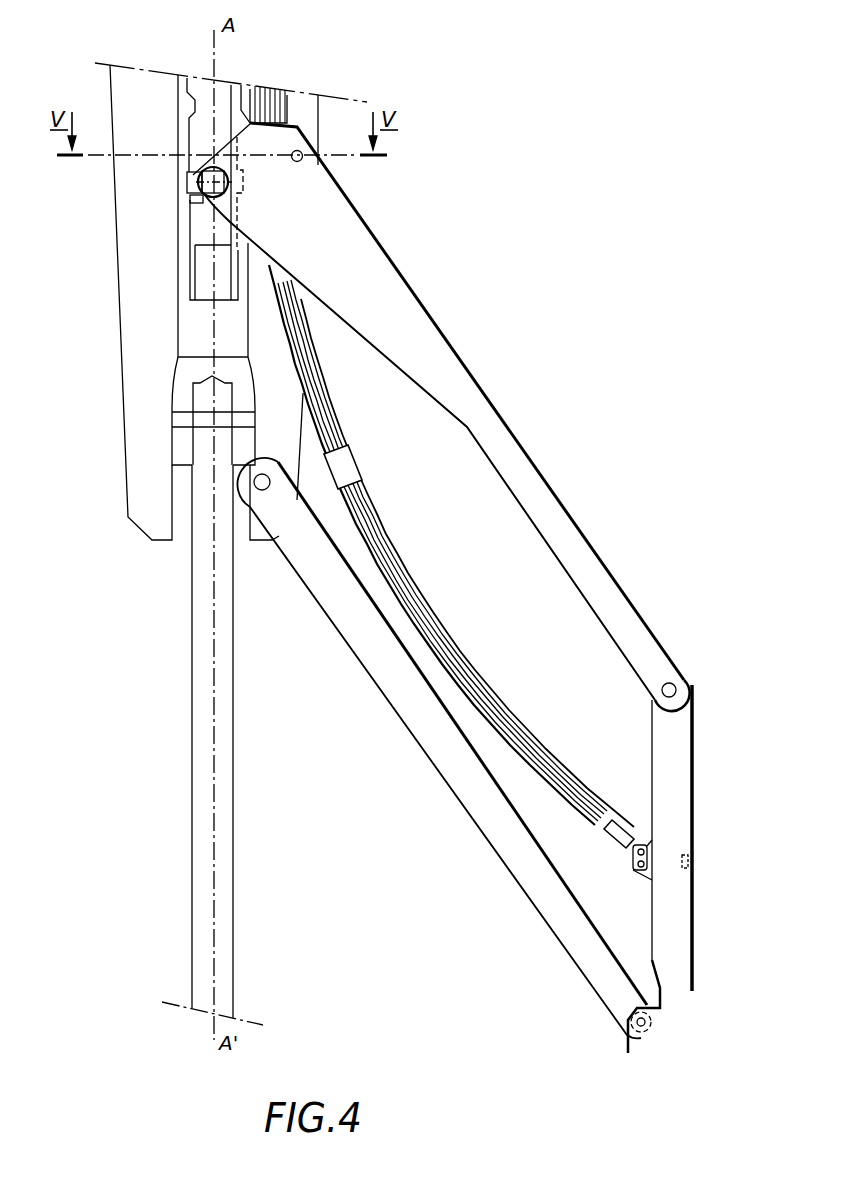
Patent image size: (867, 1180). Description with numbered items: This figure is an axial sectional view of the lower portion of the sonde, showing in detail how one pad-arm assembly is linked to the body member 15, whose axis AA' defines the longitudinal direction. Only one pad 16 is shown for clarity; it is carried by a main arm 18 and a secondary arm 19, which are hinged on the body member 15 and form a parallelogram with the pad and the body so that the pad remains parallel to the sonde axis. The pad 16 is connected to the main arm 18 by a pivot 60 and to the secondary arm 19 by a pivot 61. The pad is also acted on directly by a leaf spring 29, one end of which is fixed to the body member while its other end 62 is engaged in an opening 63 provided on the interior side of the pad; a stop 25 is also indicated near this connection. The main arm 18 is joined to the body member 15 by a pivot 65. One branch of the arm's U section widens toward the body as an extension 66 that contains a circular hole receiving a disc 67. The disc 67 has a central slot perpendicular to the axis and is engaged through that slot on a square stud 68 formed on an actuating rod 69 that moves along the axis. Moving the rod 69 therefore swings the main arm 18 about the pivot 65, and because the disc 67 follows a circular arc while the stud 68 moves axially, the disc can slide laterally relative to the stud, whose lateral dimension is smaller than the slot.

The body member 15 is at (318, 124).
The pad 16 is at (674, 748).
The main arm 18 is at (481, 402).
The secondary arm 19 is at (410, 718).
The stop 25 is at (690, 862).
The leaf spring 29 is at (397, 548).
The pivot 60 is at (676, 688).
The pivot 61 is at (638, 1018).
The end of the leaf spring 62 is at (646, 850).
The opening 63 is at (646, 866).
The pivot 65 is at (318, 160).
The extension 66 is at (244, 198).
The disc 67 is at (203, 203).
The square stud 68 is at (200, 178).
The actuating rod 69 is at (188, 106).